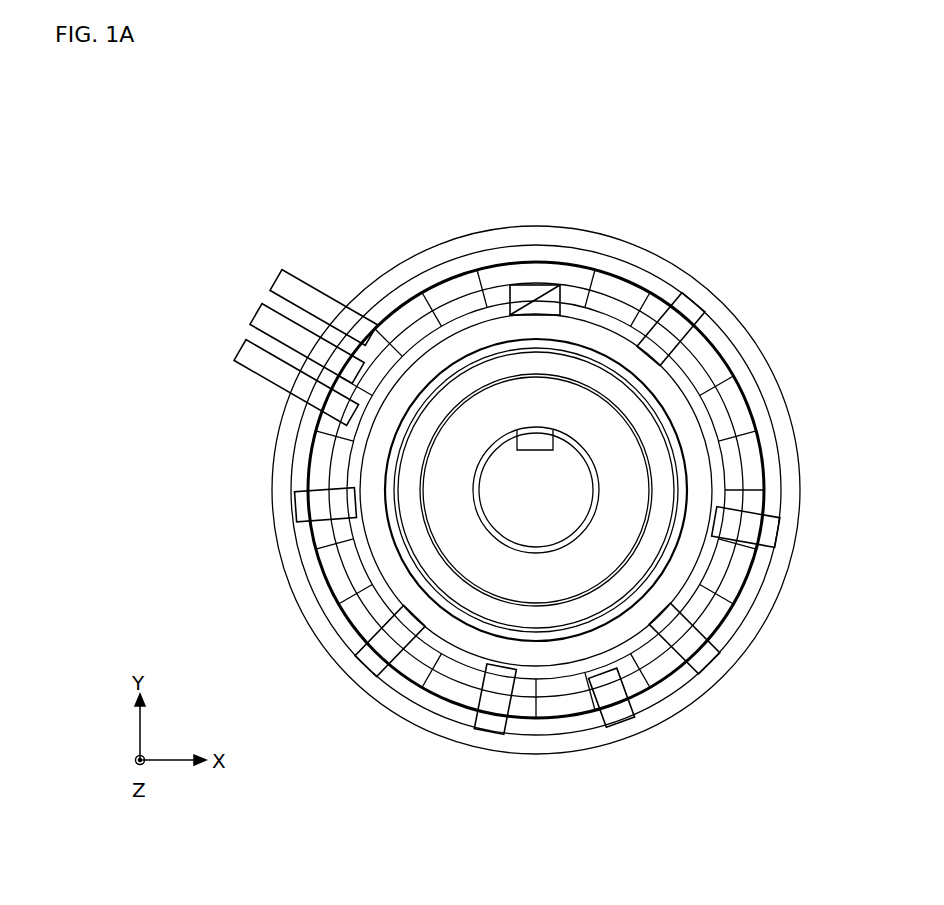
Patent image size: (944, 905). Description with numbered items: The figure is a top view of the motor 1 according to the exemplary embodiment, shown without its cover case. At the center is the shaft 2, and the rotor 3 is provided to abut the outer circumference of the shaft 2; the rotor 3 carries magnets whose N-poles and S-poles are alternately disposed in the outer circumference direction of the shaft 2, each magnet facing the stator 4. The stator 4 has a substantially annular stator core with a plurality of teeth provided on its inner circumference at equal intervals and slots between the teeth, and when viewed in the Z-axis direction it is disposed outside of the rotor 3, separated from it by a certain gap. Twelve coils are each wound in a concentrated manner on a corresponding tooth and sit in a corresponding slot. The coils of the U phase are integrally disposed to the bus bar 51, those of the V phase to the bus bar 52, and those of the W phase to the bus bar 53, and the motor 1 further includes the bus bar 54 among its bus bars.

The motor 1 is at (343, 212).
The shaft 2 is at (505, 468).
The rotor 3 is at (573, 405).
The stator 4 is at (784, 450).
The bus bar 51 is at (535, 700).
The bus bar 52 is at (712, 355).
The bus bar 53 is at (668, 290).
The bus bar 54 is at (625, 620).